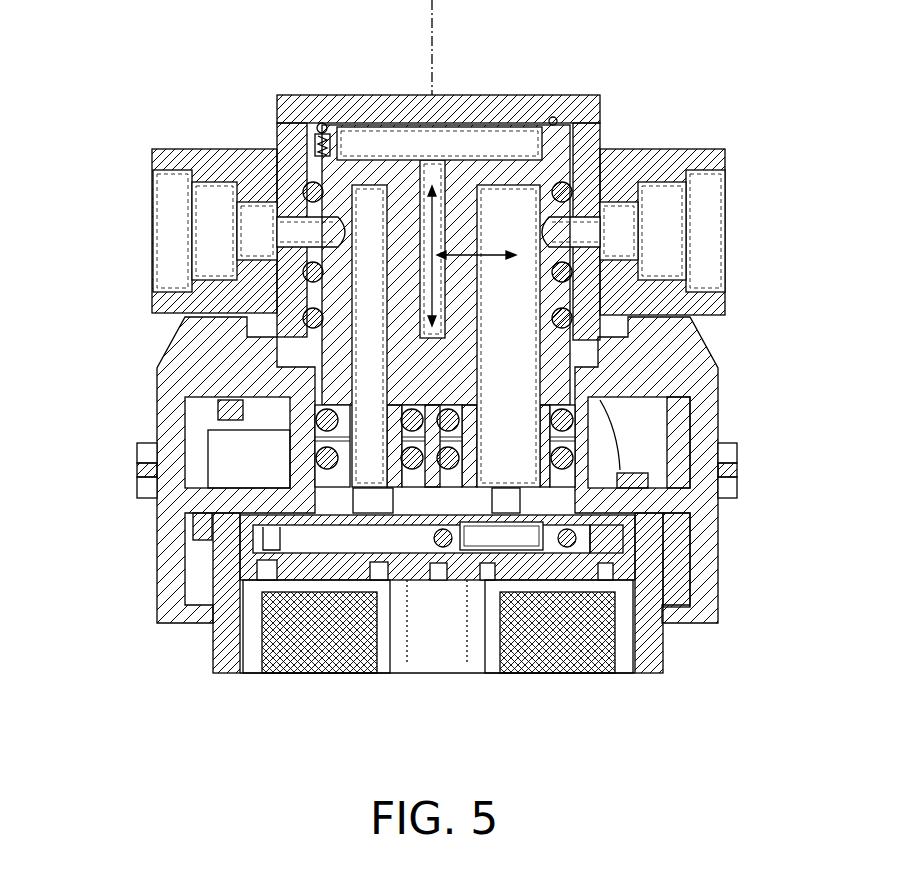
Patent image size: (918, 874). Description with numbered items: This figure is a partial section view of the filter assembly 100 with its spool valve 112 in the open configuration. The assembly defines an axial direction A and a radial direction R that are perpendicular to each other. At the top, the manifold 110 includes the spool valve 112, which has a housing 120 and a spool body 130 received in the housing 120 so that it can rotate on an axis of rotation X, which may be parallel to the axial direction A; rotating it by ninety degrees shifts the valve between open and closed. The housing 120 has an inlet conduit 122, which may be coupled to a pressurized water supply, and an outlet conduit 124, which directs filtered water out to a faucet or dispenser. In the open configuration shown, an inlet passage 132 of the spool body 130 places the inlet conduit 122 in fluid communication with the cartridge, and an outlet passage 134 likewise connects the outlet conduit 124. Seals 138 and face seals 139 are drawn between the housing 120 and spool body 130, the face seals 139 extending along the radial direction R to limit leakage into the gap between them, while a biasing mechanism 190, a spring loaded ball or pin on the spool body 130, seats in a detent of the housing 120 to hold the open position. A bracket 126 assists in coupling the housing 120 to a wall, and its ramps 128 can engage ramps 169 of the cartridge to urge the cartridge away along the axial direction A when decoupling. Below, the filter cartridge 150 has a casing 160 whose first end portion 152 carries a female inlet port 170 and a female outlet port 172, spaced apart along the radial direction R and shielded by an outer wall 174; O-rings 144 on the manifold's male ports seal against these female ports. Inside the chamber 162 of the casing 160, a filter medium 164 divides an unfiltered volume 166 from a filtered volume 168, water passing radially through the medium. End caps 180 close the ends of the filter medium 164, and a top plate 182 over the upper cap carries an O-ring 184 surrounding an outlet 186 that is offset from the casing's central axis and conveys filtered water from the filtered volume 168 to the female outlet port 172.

The filter assembly 100 is at (692, 70).
The manifold 110 is at (598, 130).
The spool valve 112 is at (432, 148).
The housing 120 is at (303, 118).
The inlet conduit 122 is at (173, 235).
The outlet conduit 124 is at (655, 231).
The bracket 126 is at (714, 530).
The ramps 128 is at (240, 470).
The spool body 130 is at (473, 186).
The inlet passage 132 is at (370, 190).
The outlet passage 134 is at (507, 212).
The seal rings 138 is at (305, 192).
The face seals 139 is at (692, 232).
The O-rings 144 is at (322, 403).
The filter cartridge 150 is at (213, 643).
The first end portion 152 is at (198, 582).
The casing 160 is at (640, 658).
The chamber 162 is at (623, 675).
The filter medium 164 is at (347, 658).
The unfiltered volume 166 is at (253, 665).
The filtered volume 168 is at (455, 662).
The ramps 169 is at (640, 440).
The female inlet port 170 is at (242, 457).
The female outlet port 172 is at (560, 443).
The outer wall 174 is at (197, 460).
The end caps 180 is at (637, 620).
The top plate 182 is at (617, 540).
The O-ring 184 is at (567, 548).
The outlet 186 is at (505, 567).
The biasing mechanism 190 is at (318, 127).
The axis of rotation X is at (436, 26).
The radial direction R is at (490, 266).
The axial direction A is at (440, 296).